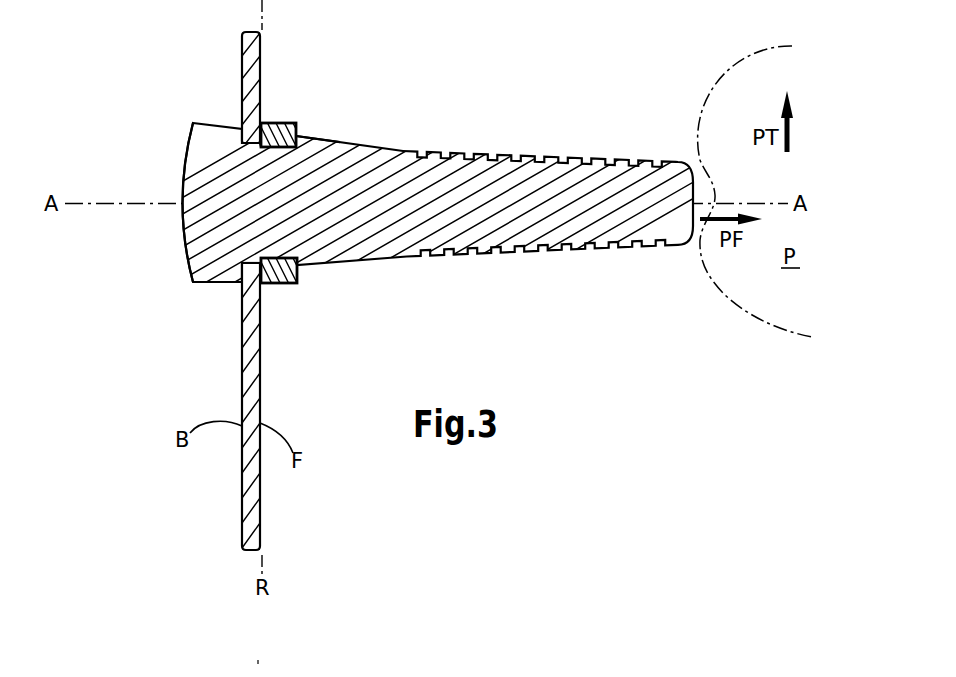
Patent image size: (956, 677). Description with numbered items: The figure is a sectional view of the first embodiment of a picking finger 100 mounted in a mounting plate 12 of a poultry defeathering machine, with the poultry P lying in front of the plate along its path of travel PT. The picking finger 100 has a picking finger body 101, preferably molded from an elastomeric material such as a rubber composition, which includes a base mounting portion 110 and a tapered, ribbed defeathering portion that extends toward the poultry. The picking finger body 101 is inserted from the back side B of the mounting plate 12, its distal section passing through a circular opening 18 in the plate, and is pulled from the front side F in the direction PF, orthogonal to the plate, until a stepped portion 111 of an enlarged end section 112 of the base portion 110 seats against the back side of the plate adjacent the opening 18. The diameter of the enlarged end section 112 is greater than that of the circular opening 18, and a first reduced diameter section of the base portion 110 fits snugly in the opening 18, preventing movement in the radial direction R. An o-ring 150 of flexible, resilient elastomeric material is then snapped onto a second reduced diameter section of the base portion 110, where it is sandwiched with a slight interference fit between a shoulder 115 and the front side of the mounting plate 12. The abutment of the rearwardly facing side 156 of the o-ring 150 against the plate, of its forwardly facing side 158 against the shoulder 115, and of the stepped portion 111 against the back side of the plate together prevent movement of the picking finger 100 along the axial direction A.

The mounting plate 12 is at (242, 76).
The circular opening 18 is at (253, 264).
The picking finger 100 is at (401, 280).
The picking finger body 101 is at (354, 130).
The base mounting portion 110 is at (258, 668).
The stepped portion 111 is at (243, 281).
The enlarged end section 112 is at (183, 177).
The shoulder 115 is at (298, 129).
The o-ring 150 is at (283, 123).
The rearwardly facing side 156 is at (241, 293).
The forwardly facing side 158 is at (299, 272).